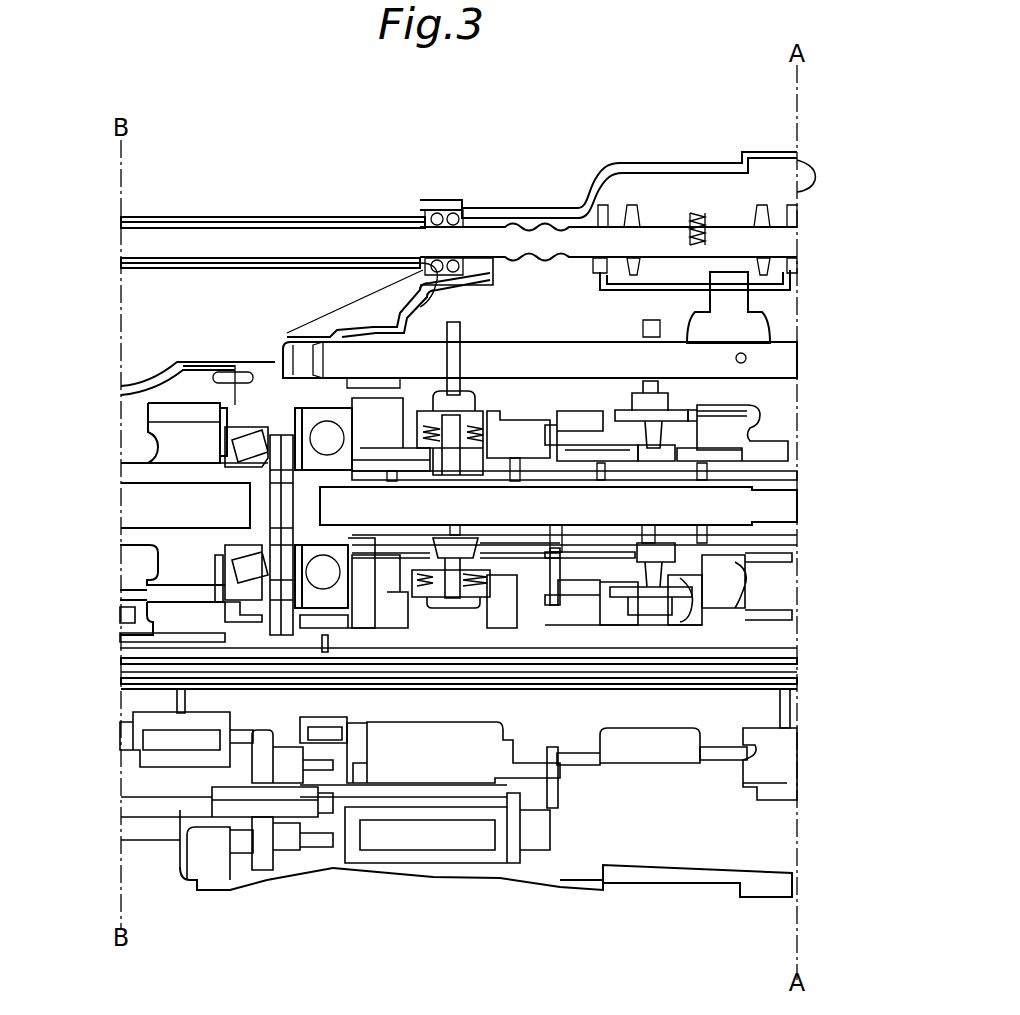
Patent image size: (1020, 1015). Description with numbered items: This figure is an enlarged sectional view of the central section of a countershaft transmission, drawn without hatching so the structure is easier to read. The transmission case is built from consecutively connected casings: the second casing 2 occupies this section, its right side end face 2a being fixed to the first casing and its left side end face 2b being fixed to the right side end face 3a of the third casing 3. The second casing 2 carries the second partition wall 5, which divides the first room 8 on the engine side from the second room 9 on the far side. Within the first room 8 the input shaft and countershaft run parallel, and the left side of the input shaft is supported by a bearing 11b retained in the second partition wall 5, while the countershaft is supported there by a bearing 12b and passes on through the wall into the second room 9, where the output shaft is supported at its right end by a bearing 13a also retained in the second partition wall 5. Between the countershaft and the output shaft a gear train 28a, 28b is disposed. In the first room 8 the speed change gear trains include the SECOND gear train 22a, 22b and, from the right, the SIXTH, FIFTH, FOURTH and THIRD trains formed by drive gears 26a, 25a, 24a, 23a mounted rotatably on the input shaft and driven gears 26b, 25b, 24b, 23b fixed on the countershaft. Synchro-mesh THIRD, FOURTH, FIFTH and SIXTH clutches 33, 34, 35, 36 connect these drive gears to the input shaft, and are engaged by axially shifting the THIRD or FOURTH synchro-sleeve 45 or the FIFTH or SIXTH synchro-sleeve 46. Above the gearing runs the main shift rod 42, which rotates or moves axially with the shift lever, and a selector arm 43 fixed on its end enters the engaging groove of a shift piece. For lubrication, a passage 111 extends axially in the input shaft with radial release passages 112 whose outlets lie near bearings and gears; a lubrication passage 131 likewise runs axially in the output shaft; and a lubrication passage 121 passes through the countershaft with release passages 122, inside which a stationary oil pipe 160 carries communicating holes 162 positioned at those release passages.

The second casing 2 is at (493, 207).
The right side end face of the second casing 2a is at (800, 177).
The left side end face of the second casing 2b is at (240, 405).
The third casing 3 is at (136, 378).
The right side end face of the third casing 3a is at (233, 883).
The second partition wall 5 is at (283, 395).
The first room 8 is at (631, 839).
The second room 9 is at (130, 425).
The bearing 11b is at (329, 421).
The bearing 12b is at (330, 732).
The bearing 13a is at (232, 472).
The SECOND gear train drive gear 22a is at (775, 447).
The SECOND gear train driven gear 22b is at (753, 787).
The THIRD drive gear 23a is at (380, 437).
The THIRD driven gear 23b is at (400, 778).
The FOURTH drive gear 24a is at (528, 432).
The FOURTH driven gear 24b is at (547, 778).
The FIFTH drive gear 25a is at (566, 425).
The FIFTH driven gear 25b is at (593, 762).
The SIXTH drive gear 26a is at (727, 410).
The SIXTH driven gear 26b is at (707, 757).
The gear of the gear train 28a is at (165, 757).
The gear of the gear train 28b is at (185, 418).
The THIRD clutch 33 is at (413, 610).
The FOURTH clutch 34 is at (475, 617).
The FIFTH clutch 35 is at (627, 583).
The SIXTH clutch 36 is at (690, 612).
The main shift rod 42 is at (302, 237).
The selector arm 43 is at (740, 305).
The THIRD or FOURTH synchro-sleeve 45 is at (443, 613).
The FIFTH or SIXTH synchro-sleeve 46 is at (643, 617).
The lubrication passage 111 is at (735, 505).
The release passages 112 is at (518, 487).
The lubrication passage 121 is at (763, 662).
The release passages 122 is at (793, 713).
The lubrication passage 131 is at (130, 505).
The oil pipe 160 is at (733, 688).
The communicating holes 162 is at (797, 672).